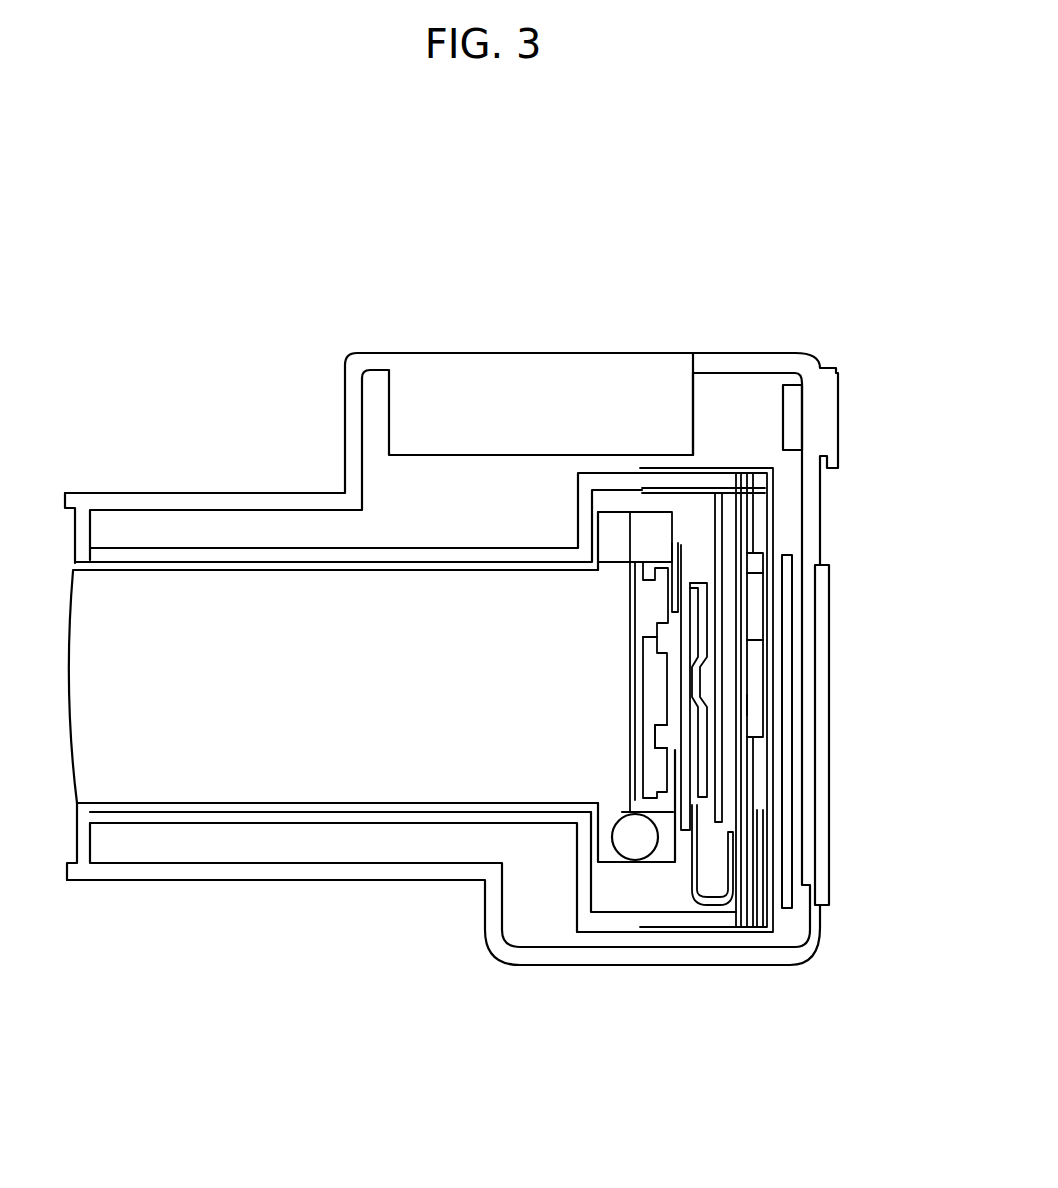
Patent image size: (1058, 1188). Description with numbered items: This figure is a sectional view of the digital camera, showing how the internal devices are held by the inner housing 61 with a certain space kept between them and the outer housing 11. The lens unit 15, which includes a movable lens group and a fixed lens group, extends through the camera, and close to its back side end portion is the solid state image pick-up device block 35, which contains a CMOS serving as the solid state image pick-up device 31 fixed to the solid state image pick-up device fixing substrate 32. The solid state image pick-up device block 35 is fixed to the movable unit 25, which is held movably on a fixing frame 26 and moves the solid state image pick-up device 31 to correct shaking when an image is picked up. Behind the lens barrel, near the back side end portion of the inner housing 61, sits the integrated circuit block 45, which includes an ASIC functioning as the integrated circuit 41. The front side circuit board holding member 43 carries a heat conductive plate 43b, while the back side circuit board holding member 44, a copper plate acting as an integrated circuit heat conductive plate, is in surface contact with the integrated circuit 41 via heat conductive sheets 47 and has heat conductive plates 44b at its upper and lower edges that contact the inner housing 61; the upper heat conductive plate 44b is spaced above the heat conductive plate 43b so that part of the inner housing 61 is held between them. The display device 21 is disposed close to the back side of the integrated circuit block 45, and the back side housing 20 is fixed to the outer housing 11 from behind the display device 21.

The outer housing 11 is at (195, 873).
The lens unit 15 is at (292, 735).
The back side housing 20 is at (814, 930).
The display device 21 is at (803, 790).
The movable unit 25 is at (652, 600).
The fixing frame 26 is at (643, 535).
The solid state image pick-up device 31 is at (667, 683).
The solid state image pick-up device fixing substrate 32 is at (672, 632).
The solid state image pick-up device block 35 is at (660, 724).
The integrated circuit 41 is at (750, 560).
The front side circuit board holding member 43 is at (718, 758).
The heat conductive plate 43b is at (655, 488).
The back side circuit board holding member 44 is at (770, 662).
The heat conductive plates 44b is at (670, 468).
The integrated circuit block 45 is at (758, 705).
The heat conductive sheets 47 is at (760, 578).
The inner housing 61 is at (126, 820).